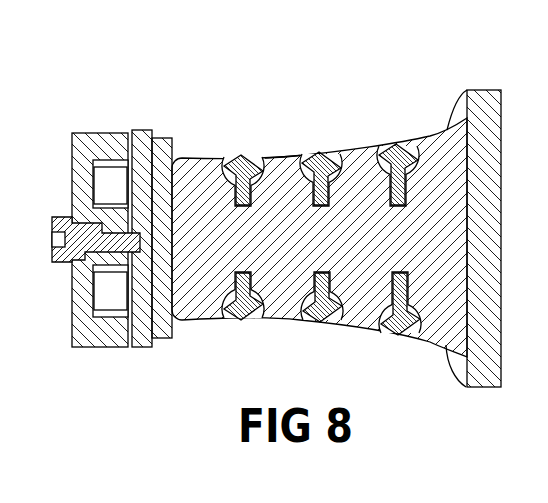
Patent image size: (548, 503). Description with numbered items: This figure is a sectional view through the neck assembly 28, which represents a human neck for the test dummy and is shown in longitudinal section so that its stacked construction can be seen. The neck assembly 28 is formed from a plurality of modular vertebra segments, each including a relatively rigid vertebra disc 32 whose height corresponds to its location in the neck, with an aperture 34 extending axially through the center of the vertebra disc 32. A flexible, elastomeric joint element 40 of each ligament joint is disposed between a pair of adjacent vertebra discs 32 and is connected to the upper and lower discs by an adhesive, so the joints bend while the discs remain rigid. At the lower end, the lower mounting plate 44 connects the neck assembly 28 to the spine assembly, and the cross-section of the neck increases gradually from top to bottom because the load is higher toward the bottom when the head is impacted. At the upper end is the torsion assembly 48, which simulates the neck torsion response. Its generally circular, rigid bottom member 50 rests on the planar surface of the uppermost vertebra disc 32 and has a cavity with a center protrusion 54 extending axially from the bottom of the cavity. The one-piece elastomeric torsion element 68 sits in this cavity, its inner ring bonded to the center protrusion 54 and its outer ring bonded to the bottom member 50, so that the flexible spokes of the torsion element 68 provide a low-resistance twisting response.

The neck assembly 28 is at (240, 95).
The vertebra disc 32 is at (242, 168).
The aperture 34 is at (293, 172).
The joint element 40 is at (200, 305).
The lower mounting plate 44 is at (488, 102).
The torsion assembly 48 is at (104, 347).
The bottom member 50 is at (143, 129).
The center protrusion 54 is at (112, 222).
The torsion element 68 is at (105, 187).